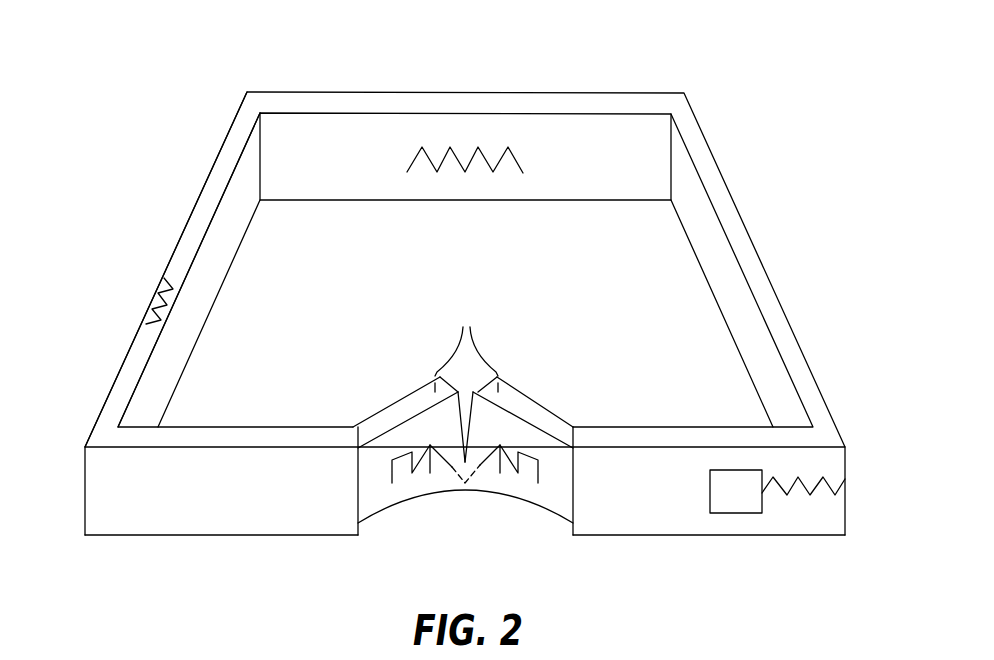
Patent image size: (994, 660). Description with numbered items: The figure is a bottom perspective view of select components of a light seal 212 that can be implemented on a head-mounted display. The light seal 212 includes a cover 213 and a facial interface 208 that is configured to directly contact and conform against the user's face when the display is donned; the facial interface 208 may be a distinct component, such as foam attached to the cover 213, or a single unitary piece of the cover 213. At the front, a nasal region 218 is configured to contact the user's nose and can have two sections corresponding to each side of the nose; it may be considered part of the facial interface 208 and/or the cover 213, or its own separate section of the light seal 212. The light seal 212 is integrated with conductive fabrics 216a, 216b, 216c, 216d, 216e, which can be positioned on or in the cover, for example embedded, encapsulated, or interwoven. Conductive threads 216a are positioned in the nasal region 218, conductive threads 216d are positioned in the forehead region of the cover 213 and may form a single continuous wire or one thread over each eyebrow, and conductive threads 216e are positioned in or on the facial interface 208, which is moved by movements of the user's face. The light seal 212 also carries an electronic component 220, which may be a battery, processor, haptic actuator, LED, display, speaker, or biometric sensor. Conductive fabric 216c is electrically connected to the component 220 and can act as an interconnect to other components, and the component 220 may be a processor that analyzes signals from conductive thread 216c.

The light seal 212 is at (615, 59).
The facial interface 208 is at (118, 405).
The cover 213 is at (197, 495).
The conductive threads 216a is at (392, 460).
The conductive fabric 216b is at (540, 468).
The conductive fabric 216c is at (787, 493).
The conductive threads 216d is at (488, 162).
The conductive threads 216e is at (153, 303).
The nasal region 218 is at (466, 378).
The electronic component 220 is at (738, 513).